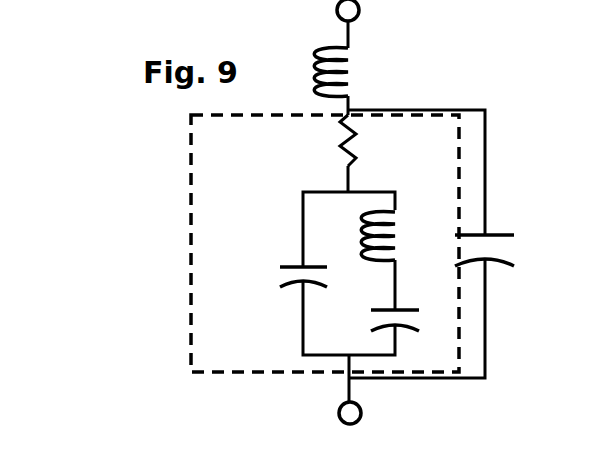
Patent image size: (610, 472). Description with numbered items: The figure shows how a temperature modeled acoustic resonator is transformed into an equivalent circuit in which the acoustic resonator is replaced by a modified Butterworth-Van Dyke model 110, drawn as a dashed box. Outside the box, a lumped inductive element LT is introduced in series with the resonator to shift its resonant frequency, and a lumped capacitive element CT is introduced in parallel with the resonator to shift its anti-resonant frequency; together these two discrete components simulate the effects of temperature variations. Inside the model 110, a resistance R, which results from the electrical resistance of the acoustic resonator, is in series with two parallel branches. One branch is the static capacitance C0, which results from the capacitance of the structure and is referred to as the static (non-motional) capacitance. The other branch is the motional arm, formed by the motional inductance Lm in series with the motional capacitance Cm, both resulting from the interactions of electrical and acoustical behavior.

The modified Butterworth-Van Dyke (MBVD) model 110 is at (190, 138).
The lumped inductive element LT is at (349, 71).
The resistance R is at (333, 142).
The static capacitance C0 is at (282, 277).
The motional inductance Lm is at (397, 235).
The motional capacitance Cm is at (411, 325).
The lumped capacitive element CT is at (499, 252).